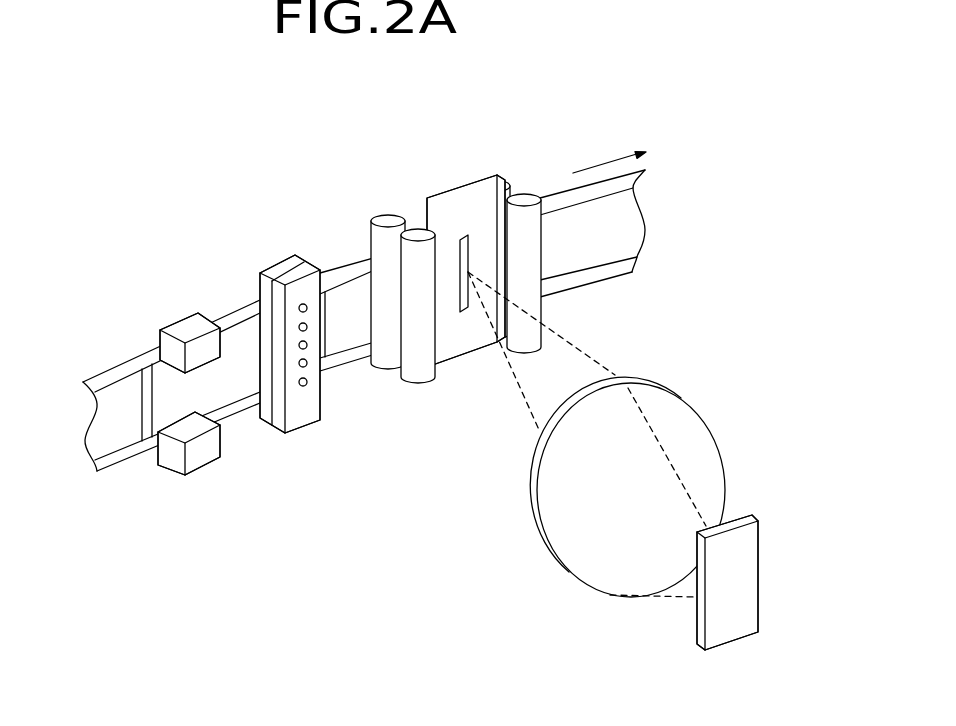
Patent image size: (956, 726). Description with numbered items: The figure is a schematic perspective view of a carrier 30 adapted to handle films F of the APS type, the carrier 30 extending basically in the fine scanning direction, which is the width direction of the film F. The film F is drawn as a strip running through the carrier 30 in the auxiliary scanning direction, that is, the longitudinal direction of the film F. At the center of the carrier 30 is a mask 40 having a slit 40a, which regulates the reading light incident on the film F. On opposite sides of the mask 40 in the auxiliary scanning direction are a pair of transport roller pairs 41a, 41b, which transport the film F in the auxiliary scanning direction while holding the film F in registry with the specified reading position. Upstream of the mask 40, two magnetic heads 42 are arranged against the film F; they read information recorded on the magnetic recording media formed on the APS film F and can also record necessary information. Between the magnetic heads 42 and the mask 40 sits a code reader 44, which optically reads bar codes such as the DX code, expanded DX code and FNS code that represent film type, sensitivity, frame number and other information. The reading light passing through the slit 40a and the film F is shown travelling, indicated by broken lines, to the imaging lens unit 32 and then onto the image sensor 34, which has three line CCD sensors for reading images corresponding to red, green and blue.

The film F is at (113, 467).
The carrier 30 is at (522, 294).
The imaging lens unit 32 is at (673, 420).
The image sensor 34 is at (740, 573).
The mask 40 is at (488, 274).
The slit 40a is at (463, 237).
The transport roller pair 41a is at (413, 370).
The transport roller pair 41b is at (525, 277).
The magnetic head 42 is at (188, 330).
The code reader 44 is at (282, 270).